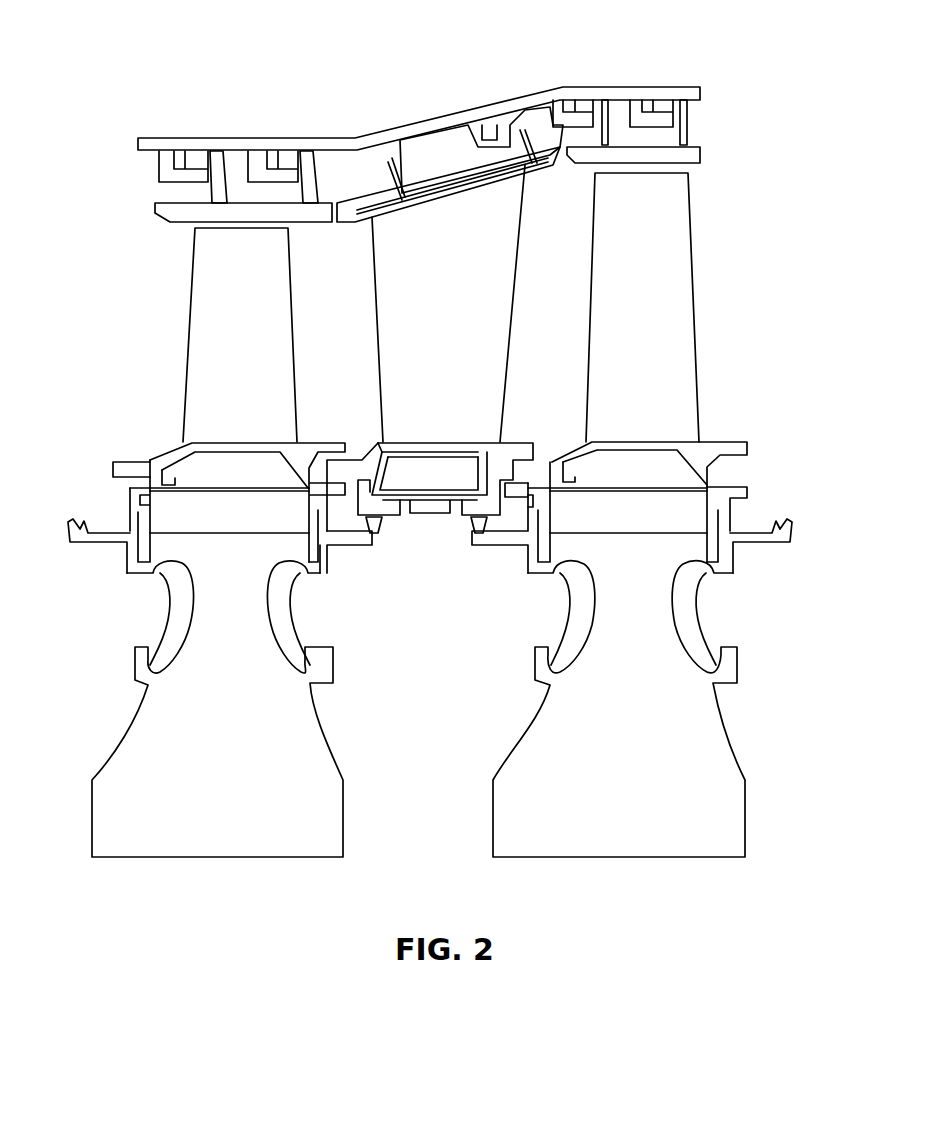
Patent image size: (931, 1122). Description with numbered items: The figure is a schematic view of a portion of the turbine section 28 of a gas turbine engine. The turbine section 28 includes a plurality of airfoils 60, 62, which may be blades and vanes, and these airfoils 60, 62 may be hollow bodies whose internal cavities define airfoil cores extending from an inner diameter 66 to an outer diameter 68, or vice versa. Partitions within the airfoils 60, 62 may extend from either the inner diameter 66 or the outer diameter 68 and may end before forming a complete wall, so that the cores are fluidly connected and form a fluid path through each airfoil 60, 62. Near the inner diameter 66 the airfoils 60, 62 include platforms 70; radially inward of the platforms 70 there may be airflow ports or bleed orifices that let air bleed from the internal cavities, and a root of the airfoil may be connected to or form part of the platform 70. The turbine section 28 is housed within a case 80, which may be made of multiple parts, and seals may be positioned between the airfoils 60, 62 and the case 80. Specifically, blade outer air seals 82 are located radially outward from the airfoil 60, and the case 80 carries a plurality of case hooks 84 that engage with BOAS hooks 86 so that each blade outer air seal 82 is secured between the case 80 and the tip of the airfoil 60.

The turbine section 28 is at (105, 45).
The airfoil 60 is at (278, 270).
The airfoil 62 is at (497, 255).
The inner diameter 66 is at (371, 436).
The outer diameter 68 is at (156, 247).
The platform 70 is at (518, 440).
The case 80 is at (457, 122).
The blade outer air seal 82 is at (228, 210).
The case hook 84 is at (158, 157).
The BOAS hook 86 is at (215, 165).